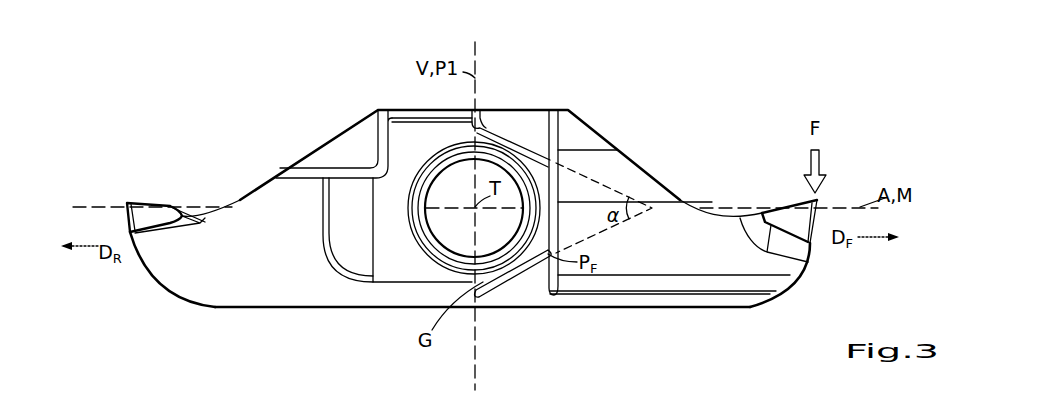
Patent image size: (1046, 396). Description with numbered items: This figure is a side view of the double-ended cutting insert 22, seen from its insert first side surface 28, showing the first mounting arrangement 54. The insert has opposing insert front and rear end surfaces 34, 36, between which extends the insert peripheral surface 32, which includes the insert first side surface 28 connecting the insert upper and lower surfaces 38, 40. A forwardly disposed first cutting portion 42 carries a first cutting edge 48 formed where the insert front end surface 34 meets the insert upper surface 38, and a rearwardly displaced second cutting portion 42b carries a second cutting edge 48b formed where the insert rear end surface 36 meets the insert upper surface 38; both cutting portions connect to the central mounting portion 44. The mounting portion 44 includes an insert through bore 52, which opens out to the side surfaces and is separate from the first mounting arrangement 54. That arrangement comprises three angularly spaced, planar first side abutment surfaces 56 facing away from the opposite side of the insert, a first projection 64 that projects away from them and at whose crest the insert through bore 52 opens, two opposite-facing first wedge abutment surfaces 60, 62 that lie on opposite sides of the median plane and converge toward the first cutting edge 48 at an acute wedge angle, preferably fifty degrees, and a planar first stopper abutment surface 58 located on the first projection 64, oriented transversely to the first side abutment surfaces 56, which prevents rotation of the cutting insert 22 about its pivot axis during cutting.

The cutting insert 22 is at (758, 88).
The insert first side surface 28 is at (268, 255).
The insert peripheral surface 32 is at (618, 162).
The insert front end surface 34 is at (793, 257).
The insert rear end surface 36 is at (158, 280).
The insert upper surface 38 is at (530, 110).
The insert lower surface 40 is at (585, 308).
The first cutting portion 42 is at (752, 175).
The second cutting portion 42b is at (178, 152).
The mounting portion 44 is at (390, 72).
The first cutting edge 48 is at (820, 203).
The second cutting edge 48b is at (127, 200).
The insert through bore 52 is at (452, 190).
The first mounting arrangement 54 is at (395, 260).
The first side abutment surface 56 is at (331, 161).
The first stopper abutment surface 58 is at (300, 173).
The first wedge upper abutment surface 60 is at (505, 135).
The first wedge lower abutment surface 62 is at (522, 272).
The first projection 64 is at (388, 248).